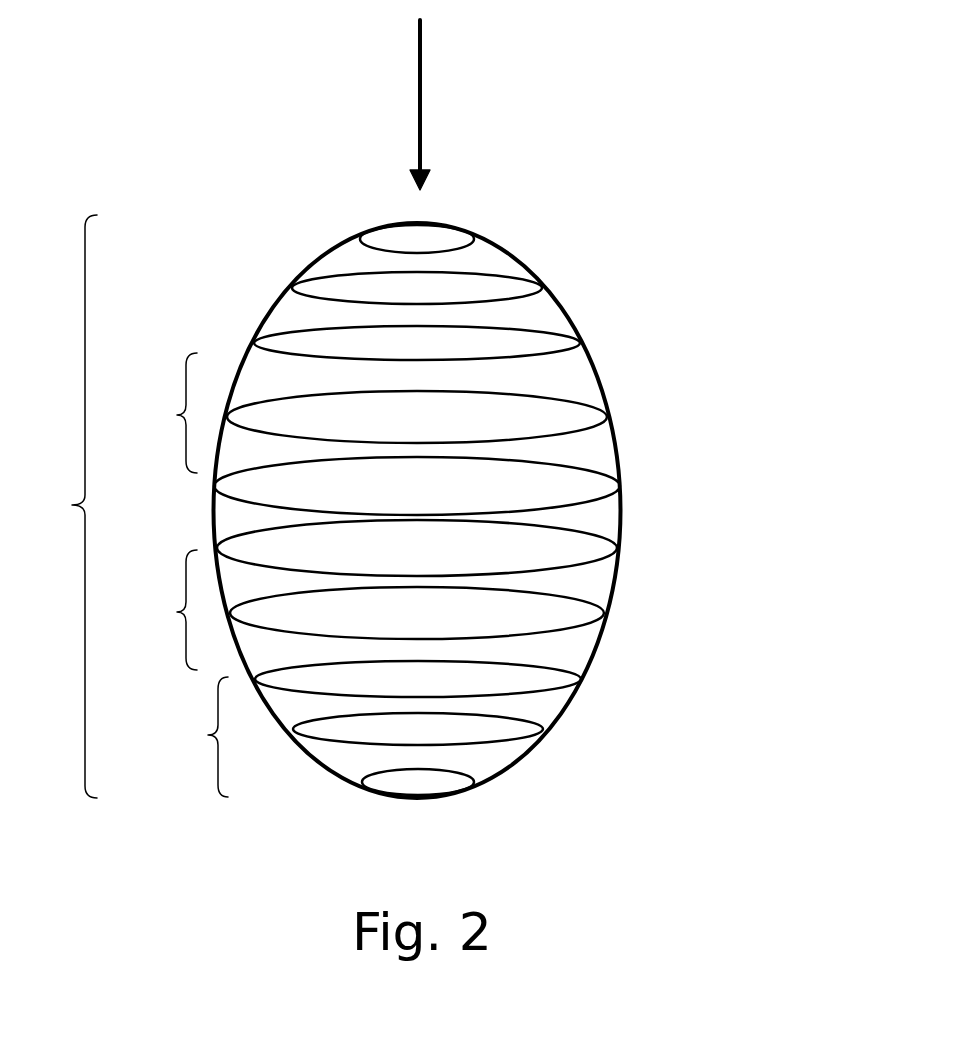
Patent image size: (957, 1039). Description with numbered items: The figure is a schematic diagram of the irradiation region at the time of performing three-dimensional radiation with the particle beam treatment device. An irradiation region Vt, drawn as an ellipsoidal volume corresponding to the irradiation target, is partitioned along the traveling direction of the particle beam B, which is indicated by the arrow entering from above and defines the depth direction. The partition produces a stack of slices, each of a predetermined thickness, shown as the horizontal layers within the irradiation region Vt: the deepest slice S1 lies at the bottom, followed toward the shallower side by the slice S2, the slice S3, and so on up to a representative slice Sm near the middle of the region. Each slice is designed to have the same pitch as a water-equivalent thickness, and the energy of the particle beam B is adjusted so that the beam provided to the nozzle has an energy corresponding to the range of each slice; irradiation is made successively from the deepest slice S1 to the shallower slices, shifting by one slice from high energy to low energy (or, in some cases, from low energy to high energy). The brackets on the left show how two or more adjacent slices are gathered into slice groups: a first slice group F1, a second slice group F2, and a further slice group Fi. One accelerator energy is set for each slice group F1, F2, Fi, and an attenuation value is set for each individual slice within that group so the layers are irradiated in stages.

The particle beam B is at (423, 95).
The slice Sm is at (565, 415).
The slice S3 is at (567, 680).
The slice S2 is at (513, 732).
The slice S1 is at (507, 770).
The irradiation region Vt is at (51, 506).
The slice group Fi is at (165, 413).
The slice group F2 is at (162, 610).
The slice group F1 is at (182, 737).